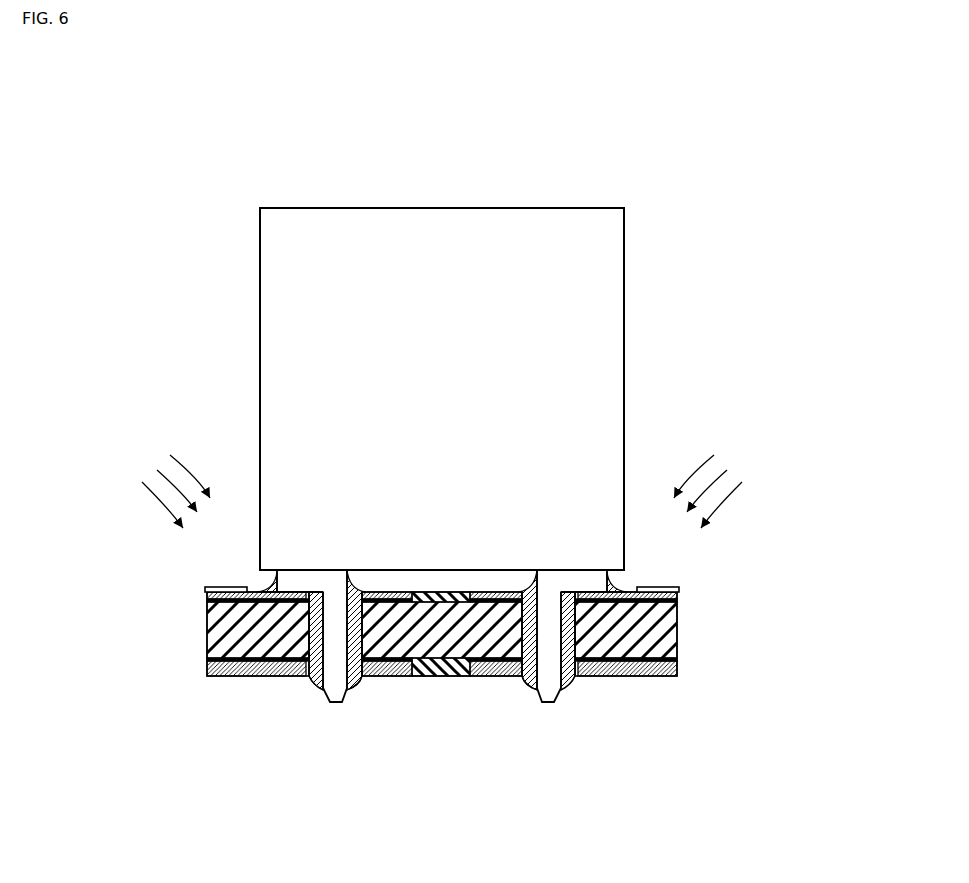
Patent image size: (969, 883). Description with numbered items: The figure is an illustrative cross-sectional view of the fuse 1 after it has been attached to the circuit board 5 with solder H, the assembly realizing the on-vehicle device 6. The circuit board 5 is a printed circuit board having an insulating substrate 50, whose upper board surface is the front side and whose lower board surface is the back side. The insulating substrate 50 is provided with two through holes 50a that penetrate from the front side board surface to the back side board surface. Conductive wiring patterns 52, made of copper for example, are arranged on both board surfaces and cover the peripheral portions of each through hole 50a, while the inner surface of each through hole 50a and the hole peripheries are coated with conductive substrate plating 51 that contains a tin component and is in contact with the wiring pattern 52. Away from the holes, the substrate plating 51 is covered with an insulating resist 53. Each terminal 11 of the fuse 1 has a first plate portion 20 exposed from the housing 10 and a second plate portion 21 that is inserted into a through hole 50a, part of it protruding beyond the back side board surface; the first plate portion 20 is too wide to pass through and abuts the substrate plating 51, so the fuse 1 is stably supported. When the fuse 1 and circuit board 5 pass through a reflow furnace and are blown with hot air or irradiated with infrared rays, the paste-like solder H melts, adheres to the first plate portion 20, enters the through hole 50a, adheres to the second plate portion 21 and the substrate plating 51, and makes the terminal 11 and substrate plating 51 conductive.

The fuse 1 is at (564, 173).
The circuit board 5 is at (440, 596).
The on-vehicle device 6 is at (706, 127).
The housing 10 is at (625, 277).
The terminal 11 is at (340, 714).
The first plate portion 20 is at (300, 578).
The second plate portion 21 is at (327, 689).
The insulating substrate 50 is at (207, 632).
The through hole 50a is at (322, 612).
The substrate plating 51 is at (206, 591).
The wiring pattern 52 is at (390, 597).
The resist 53 is at (224, 588).
The solder H is at (266, 590).